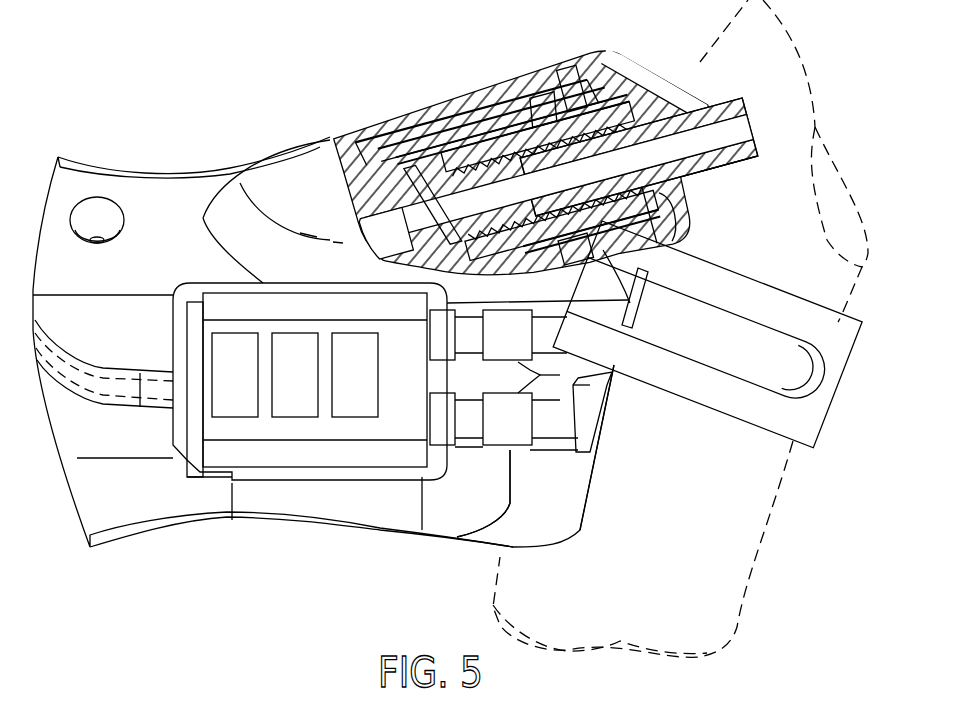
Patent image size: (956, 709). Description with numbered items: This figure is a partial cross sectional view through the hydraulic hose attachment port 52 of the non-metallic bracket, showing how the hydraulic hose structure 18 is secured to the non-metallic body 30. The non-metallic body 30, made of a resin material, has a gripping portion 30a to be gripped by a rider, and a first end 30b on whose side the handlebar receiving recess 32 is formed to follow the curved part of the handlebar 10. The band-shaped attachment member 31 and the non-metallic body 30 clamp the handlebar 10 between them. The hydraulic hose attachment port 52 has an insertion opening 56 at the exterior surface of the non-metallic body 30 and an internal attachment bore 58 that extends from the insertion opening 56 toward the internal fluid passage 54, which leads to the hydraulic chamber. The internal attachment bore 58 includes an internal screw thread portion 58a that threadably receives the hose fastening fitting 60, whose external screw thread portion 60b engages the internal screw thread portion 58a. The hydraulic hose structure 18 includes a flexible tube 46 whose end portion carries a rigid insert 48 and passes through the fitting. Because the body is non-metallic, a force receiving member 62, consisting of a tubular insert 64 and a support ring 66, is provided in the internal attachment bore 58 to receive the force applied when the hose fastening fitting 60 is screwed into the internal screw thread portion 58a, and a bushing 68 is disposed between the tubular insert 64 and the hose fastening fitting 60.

The bicycle handlebar 10 is at (747, 597).
The hydraulic hose structure 18 is at (759, 116).
The non-metallic body 30 is at (150, 533).
The gripping portion 30a is at (177, 163).
The first end 30b is at (583, 510).
The attachment member 31 is at (717, 410).
The handlebar receiving recess 32 is at (603, 420).
The flexible tube 46 is at (740, 163).
The rigid insert 48 is at (579, 169).
The hydraulic hose attachment port 52 is at (575, 252).
The internal fluid passage 54 is at (370, 230).
The insertion opening 56 is at (640, 207).
The internal attachment bore 58 is at (497, 145).
The internal screw thread portion 58a is at (546, 101).
The hose fastening fitting 60 is at (640, 91).
The external screw thread portion 60b is at (632, 310).
The force receiving member 62 is at (402, 175).
The tubular insert 64 is at (422, 158).
The support ring 66 is at (570, 85).
The bushing 68 is at (479, 145).